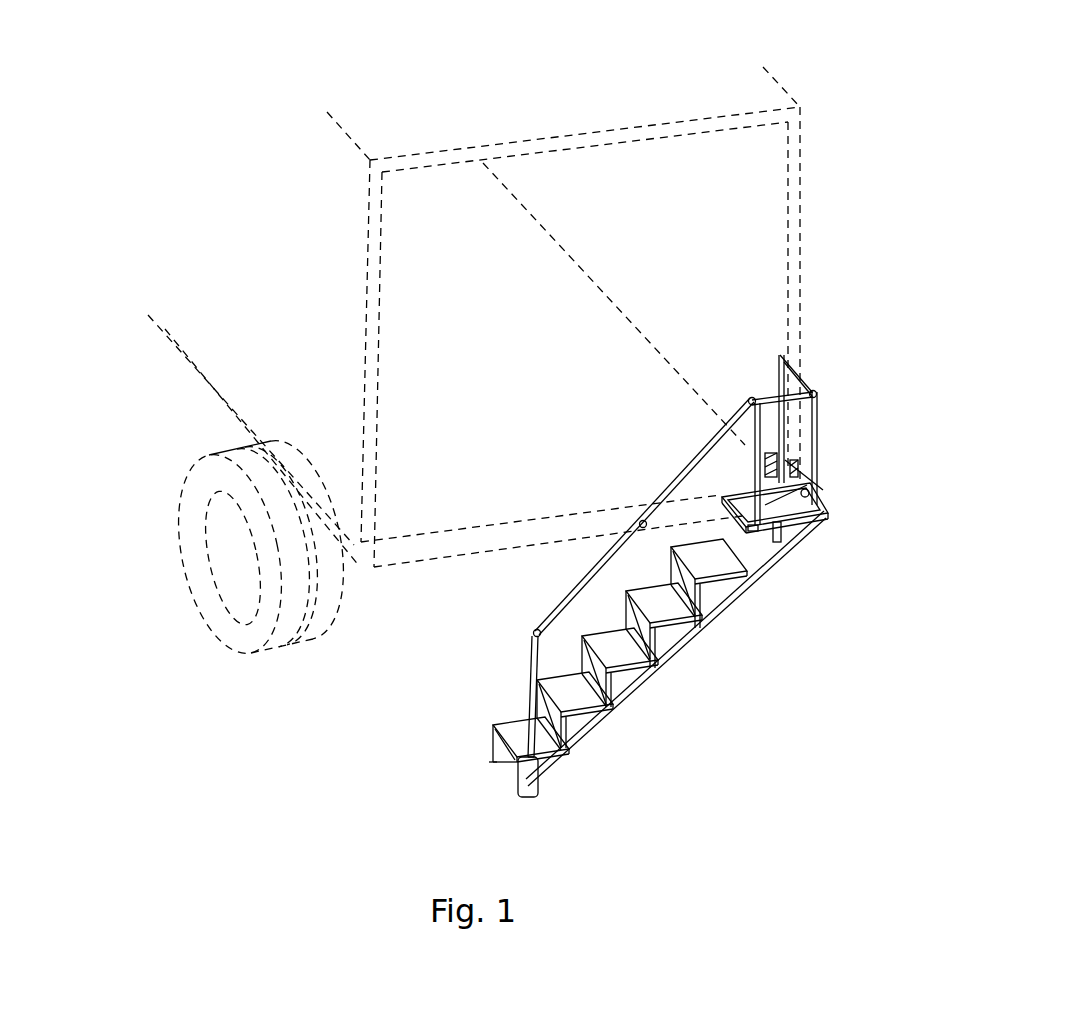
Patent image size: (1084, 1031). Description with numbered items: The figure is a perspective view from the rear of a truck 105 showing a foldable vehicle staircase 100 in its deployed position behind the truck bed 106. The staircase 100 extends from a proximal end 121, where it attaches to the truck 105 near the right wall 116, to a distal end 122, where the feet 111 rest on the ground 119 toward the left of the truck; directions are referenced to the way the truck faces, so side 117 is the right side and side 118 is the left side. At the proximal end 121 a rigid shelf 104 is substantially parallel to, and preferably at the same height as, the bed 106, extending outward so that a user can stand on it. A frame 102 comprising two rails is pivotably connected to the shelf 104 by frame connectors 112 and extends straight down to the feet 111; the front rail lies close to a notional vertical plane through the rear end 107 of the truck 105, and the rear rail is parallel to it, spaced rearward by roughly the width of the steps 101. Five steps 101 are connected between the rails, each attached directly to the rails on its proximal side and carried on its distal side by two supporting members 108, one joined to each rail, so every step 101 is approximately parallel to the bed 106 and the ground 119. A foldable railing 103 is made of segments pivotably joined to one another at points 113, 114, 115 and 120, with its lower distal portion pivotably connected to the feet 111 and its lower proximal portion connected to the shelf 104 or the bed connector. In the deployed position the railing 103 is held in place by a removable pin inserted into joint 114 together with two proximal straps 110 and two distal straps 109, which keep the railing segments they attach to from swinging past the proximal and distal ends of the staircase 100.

The foldable vehicle staircase 100 is at (636, 570).
The steps 101 is at (565, 650).
The frame 102 is at (725, 593).
The foldable railing 103 is at (590, 540).
The rigid shelf 104 is at (792, 508).
The truck 105 is at (476, 382).
The truck bed 106 is at (544, 424).
The rear end of the truck 107 is at (568, 527).
The supporting members 108 is at (698, 600).
The distal straps 109 is at (547, 722).
The proximal straps 110 is at (807, 462).
The feet 111 is at (492, 757).
The frame connectors 112 is at (777, 542).
The pivot point 113 is at (532, 635).
The joint 114 is at (643, 524).
The pivot point 115 is at (751, 398).
The right wall 116 is at (701, 206).
The right side 117 is at (801, 196).
The left side 118 is at (290, 287).
The ground 119 is at (384, 696).
The pivot point 120 is at (815, 391).
The proximal end 121 is at (828, 449).
The distal end 122 is at (478, 744).